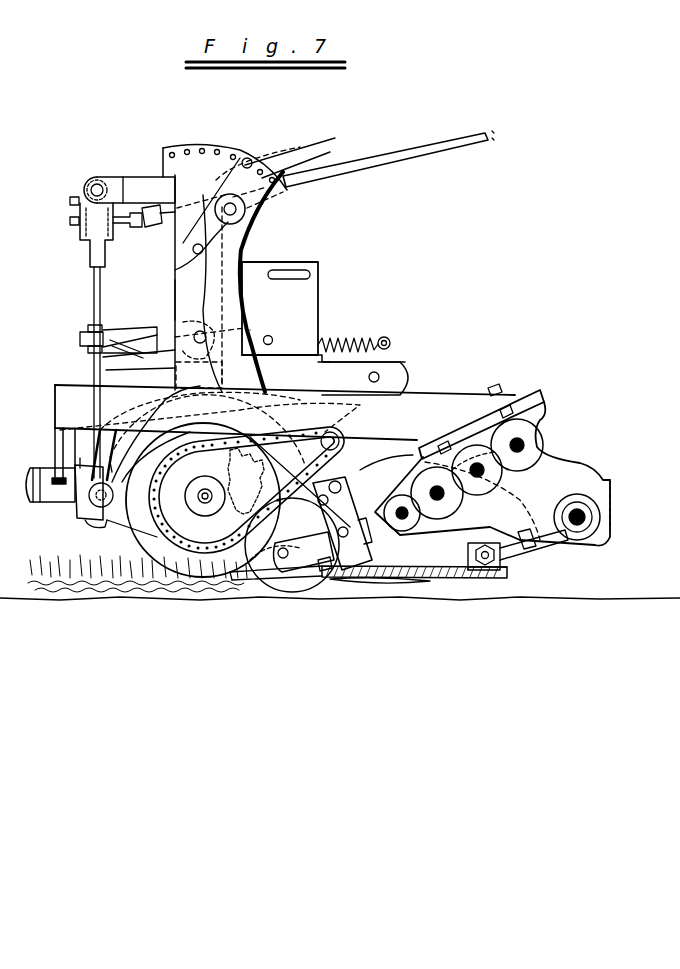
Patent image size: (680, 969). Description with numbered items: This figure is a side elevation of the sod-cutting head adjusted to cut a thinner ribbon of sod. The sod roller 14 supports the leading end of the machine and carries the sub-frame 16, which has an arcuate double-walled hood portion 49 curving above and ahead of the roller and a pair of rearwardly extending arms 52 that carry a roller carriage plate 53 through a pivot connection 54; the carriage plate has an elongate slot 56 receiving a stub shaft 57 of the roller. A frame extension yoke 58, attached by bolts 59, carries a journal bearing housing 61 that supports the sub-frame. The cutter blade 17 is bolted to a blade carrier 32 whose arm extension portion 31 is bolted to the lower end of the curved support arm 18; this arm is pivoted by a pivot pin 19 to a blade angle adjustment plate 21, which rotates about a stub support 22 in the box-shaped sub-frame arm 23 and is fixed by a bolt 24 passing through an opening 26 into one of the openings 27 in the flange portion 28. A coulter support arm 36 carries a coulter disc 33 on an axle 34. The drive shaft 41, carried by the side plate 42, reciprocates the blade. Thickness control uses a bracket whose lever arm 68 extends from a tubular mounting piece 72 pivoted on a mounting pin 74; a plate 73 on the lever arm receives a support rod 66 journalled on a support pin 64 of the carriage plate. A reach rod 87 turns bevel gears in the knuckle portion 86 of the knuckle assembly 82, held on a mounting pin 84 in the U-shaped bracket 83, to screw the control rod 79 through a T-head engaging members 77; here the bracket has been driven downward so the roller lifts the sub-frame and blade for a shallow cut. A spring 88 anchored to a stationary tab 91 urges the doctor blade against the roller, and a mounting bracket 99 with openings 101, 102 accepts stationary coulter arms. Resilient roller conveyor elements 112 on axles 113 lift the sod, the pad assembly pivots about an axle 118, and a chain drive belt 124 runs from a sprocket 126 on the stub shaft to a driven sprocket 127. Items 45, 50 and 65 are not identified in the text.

The roller 14 is at (135, 530).
The sub-frame 16 is at (160, 304).
The cutter blade 17 is at (282, 590).
The curved support arm 18 is at (232, 262).
The pivot pin 19 is at (249, 225).
The blade angle adjustment plate 21 is at (246, 206).
The stub support 22 is at (194, 251).
The sub-frame arm 23 is at (173, 281).
The bolt 24 is at (248, 162).
The opening 26 is at (268, 165).
The opening 27 is at (190, 148).
The flange portion 28 is at (222, 152).
The arm extension portion 31 is at (350, 517).
The blade carrier 32 is at (457, 580).
The coulter disc 33 is at (255, 585).
The axle 34 is at (228, 585).
The coulter support arm 36 is at (320, 557).
The drive shaft 41 is at (577, 530).
The side plate 42 is at (556, 478).
The wheel 45 is at (612, 517).
The hood portion 49 is at (95, 515).
The link 50 is at (538, 548).
The rearwardly extending arm 52 is at (300, 363).
The roller carriage plate 53 is at (380, 370).
The pivot connection 54 is at (385, 380).
The elongate slot 56 is at (178, 582).
The stub shaft 57 is at (205, 495).
The frame extension yoke 58 is at (402, 426).
The bolt 59 is at (497, 385).
The journal bearing housing 61 is at (22, 490).
The support pin 64 is at (98, 500).
The shaft 65 is at (37, 477).
The support rod 66 is at (95, 376).
The lever arm 68 is at (156, 354).
The tubular mounting piece 72 is at (199, 378).
The plate 73 is at (82, 339).
The mounting pin 74 is at (198, 333).
The member 77 is at (173, 360).
The control rod 79 is at (93, 286).
The knuckle assembly 82 is at (67, 214).
The U-shaped bracket 83 is at (100, 164).
The mounting pin 84 is at (102, 186).
The knuckle portion 86 is at (95, 230).
The reach rod 87 is at (412, 154).
The spring 88 is at (348, 345).
The stationary tab 91 is at (386, 330).
The mounting bracket 99 is at (282, 316).
The opening 101 is at (298, 272).
The opening 102 is at (274, 340).
The roller conveyor element 112 is at (497, 503).
The axle 113 is at (403, 525).
The axle 118 is at (334, 436).
The chain drive belt 124 is at (150, 535).
The sprocket 126 is at (240, 490).
The driven sprocket 127 is at (355, 462).